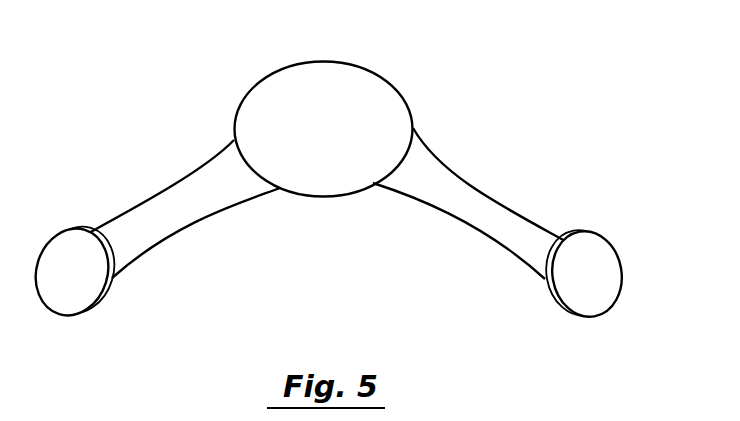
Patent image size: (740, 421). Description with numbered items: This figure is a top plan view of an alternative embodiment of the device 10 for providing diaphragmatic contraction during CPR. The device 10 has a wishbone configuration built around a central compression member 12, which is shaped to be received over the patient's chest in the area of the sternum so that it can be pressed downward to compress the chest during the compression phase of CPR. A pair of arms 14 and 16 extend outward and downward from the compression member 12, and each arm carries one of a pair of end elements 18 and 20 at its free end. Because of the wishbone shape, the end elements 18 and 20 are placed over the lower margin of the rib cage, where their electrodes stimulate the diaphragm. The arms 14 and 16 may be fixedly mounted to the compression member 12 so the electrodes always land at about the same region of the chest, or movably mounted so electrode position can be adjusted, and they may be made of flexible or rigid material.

The device 10 is at (327, 191).
The compression member 12 is at (298, 87).
The arm 14 is at (472, 205).
The arm 16 is at (175, 215).
The end element 18 is at (590, 285).
The end element 20 is at (62, 278).